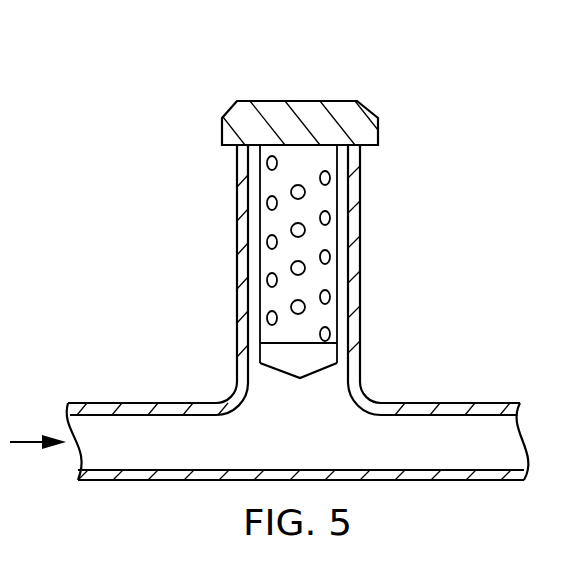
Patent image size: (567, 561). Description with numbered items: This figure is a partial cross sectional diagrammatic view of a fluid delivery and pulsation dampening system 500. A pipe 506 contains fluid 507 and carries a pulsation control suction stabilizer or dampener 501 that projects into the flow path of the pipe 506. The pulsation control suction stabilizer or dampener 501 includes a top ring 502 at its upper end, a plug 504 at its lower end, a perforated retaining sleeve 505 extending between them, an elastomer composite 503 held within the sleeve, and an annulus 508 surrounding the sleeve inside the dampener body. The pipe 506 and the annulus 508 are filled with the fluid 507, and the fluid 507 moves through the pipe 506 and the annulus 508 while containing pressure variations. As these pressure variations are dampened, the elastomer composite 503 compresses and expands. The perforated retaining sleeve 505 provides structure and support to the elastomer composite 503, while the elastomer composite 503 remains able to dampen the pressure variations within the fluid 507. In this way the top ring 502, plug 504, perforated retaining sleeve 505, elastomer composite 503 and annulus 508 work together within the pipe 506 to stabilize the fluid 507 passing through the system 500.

The filter assembly 500 is at (383, 78).
The pulsation control suction stabilizer or dampener 501 is at (243, 265).
The top ring 502 is at (232, 130).
The elastomer composite 503 is at (262, 160).
The plug 504 is at (302, 380).
The perforated retaining sleeve 505 is at (342, 228).
The pipe 506 is at (137, 408).
The fluid 507 is at (400, 455).
The annulus 508 is at (345, 260).